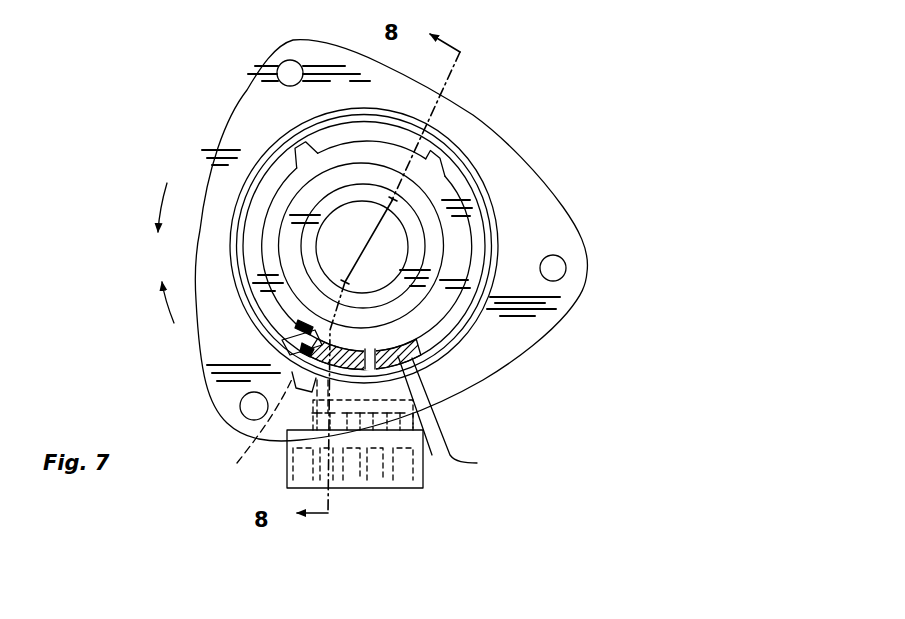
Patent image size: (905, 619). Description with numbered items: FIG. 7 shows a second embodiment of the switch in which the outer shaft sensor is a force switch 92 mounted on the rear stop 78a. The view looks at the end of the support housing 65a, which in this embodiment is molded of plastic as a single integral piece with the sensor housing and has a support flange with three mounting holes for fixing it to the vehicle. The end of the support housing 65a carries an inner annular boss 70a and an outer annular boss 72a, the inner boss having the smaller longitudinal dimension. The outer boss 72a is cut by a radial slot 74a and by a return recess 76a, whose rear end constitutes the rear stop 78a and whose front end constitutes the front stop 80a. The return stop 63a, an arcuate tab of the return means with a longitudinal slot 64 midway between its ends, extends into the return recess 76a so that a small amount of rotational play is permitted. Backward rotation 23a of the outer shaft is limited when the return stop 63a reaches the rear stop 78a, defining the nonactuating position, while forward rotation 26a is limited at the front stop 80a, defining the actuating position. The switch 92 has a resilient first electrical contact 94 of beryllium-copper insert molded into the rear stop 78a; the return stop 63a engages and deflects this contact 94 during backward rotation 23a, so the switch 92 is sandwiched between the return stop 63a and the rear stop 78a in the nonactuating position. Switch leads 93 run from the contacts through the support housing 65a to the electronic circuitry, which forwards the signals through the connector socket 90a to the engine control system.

The backward rotation 23a is at (165, 306).
The forward rotation 26a is at (160, 206).
The return stop 63a is at (442, 412).
The longitudinal slot 64 is at (361, 348).
The support housing 65a is at (475, 116).
The inner annular boss 70a is at (325, 214).
The outer annular boss 72a is at (482, 243).
The radial slot 74a is at (300, 150).
The return recess 76a is at (432, 455).
The rear stop 78a is at (298, 362).
The front stop 80a is at (392, 355).
The connector socket 90a is at (420, 488).
The force switch 92 is at (296, 328).
The switch leads 93 is at (252, 434).
The first electrical contact 94 is at (320, 352).